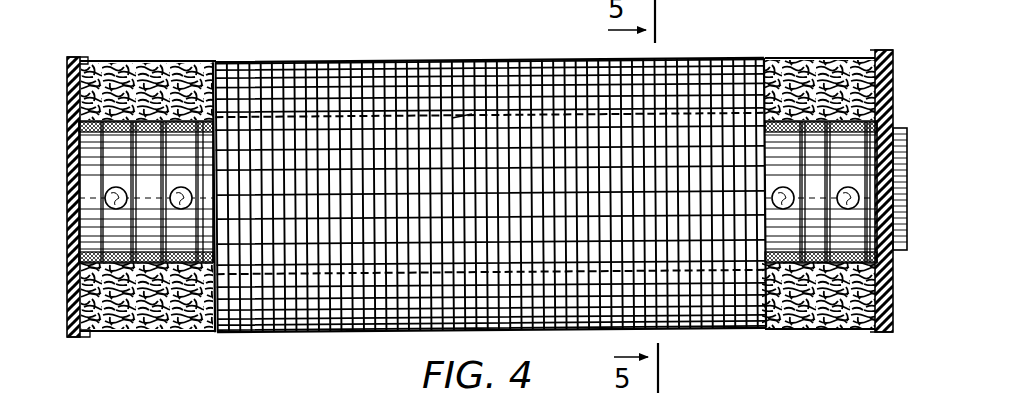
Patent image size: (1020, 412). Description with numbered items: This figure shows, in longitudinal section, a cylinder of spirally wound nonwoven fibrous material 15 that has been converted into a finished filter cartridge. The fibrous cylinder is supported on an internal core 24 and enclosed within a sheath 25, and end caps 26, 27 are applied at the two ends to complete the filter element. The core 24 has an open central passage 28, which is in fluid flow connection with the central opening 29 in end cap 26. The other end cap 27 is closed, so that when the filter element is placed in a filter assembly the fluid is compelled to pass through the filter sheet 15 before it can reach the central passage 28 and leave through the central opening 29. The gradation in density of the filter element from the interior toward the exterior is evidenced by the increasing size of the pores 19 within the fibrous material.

The nonwoven fibrous material 15 is at (344, 56).
The pores 19 is at (115, 328).
The core 24 is at (97, 250).
The sheath 25 is at (195, 330).
The end cap 26 is at (893, 288).
The end cap 27 is at (68, 90).
The open central passage 28 is at (462, 128).
The central opening 29 is at (895, 182).